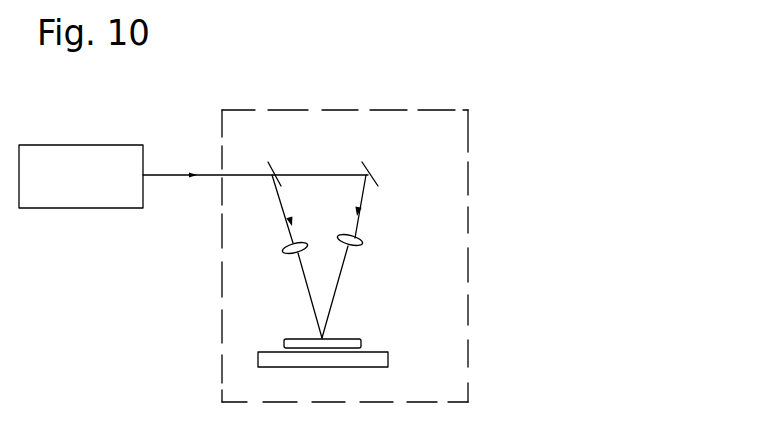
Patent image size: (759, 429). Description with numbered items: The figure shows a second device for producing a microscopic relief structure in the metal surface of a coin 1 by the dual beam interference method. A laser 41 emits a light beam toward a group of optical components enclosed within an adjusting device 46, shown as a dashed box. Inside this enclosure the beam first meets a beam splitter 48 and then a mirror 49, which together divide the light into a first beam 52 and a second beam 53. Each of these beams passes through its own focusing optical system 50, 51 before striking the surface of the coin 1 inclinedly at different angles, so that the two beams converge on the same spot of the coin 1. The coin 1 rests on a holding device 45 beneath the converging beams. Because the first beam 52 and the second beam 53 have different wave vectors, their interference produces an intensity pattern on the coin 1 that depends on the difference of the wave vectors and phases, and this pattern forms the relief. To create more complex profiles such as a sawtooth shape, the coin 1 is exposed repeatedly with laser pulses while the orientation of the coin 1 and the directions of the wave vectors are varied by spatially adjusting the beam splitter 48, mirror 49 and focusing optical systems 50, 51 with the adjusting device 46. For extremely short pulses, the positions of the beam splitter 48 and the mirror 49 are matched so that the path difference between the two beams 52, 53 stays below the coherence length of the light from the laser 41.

The laser 41 is at (89, 148).
The adjusting device 46 is at (453, 142).
The beam splitter 48 is at (276, 163).
The mirror 49 is at (363, 163).
The first beam 52 is at (280, 205).
The second beam 53 is at (364, 201).
The focusing optical system 50 is at (287, 255).
The focusing optical system 51 is at (358, 247).
The coin 1 is at (355, 339).
The holding device 45 is at (367, 363).